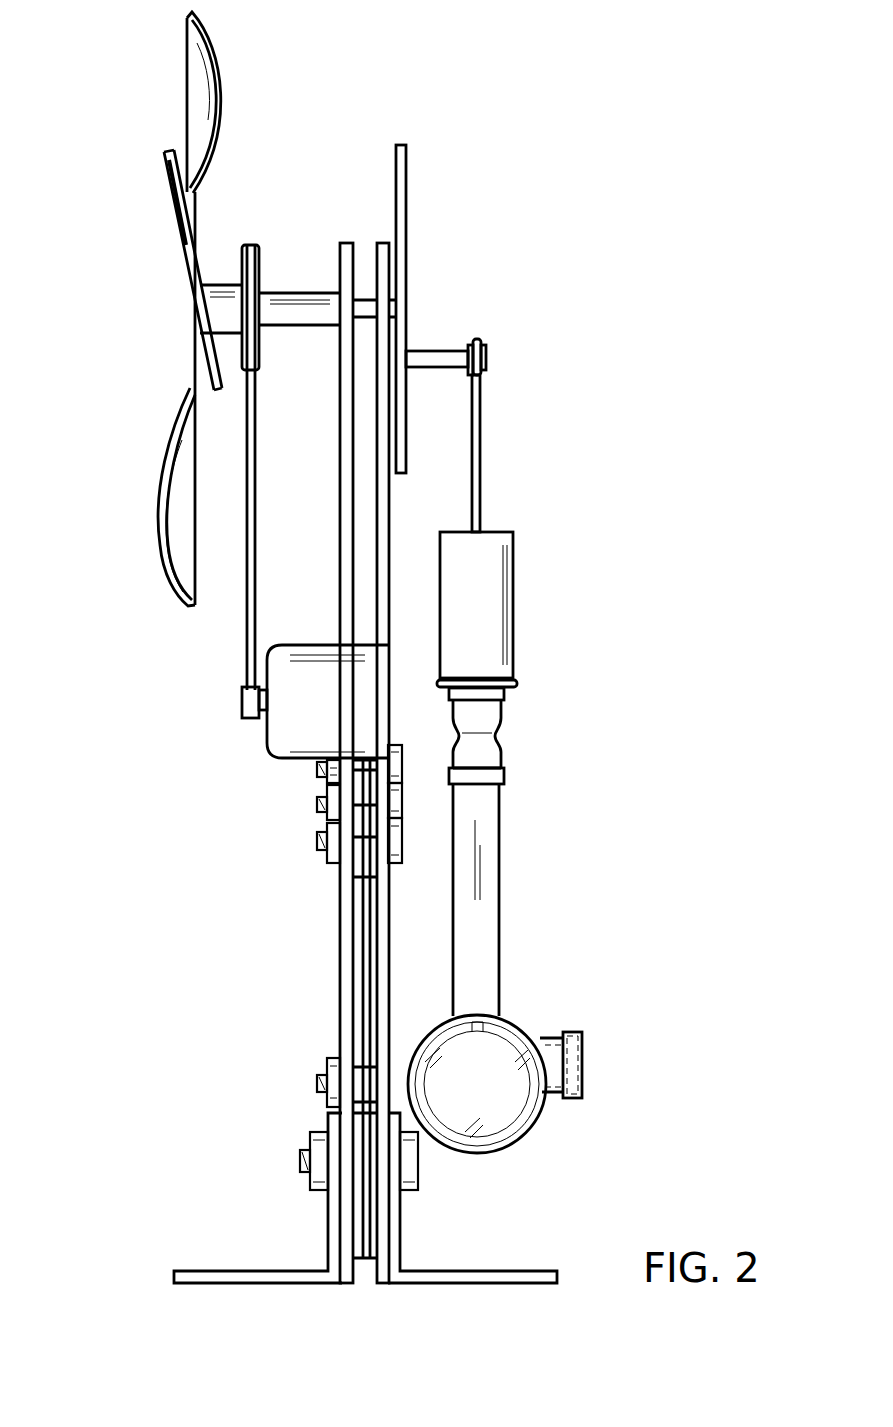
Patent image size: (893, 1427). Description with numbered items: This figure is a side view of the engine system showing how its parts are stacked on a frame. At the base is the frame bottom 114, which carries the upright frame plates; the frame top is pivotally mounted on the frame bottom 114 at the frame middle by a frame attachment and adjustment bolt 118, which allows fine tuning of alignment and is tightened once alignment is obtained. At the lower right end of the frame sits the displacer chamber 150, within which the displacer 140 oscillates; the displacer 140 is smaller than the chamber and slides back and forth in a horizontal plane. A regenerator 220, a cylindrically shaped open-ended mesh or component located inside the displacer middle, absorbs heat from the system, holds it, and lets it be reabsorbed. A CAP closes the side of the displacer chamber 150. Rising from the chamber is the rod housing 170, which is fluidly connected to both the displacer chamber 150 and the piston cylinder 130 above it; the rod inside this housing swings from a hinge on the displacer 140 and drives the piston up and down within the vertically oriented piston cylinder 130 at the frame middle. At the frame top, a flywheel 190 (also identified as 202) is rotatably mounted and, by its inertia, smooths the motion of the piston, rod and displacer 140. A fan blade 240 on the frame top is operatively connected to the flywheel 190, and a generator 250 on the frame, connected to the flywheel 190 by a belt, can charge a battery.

The fan blade 240 is at (225, 105).
The flywheel 190 is at (498, 336).
The support bracket 202 is at (407, 200).
The piston cylinder 130 is at (515, 605).
The generator 250 is at (268, 753).
The frame attachment and adjustment bolt 118 is at (323, 800).
The rod housing 170 is at (500, 855).
The displacer 140 is at (487, 1103).
The cap CAP is at (573, 1030).
The displacer chamber 150 is at (520, 1099).
The regenerator 220 is at (487, 1142).
The frame bottom 114 is at (242, 1268).